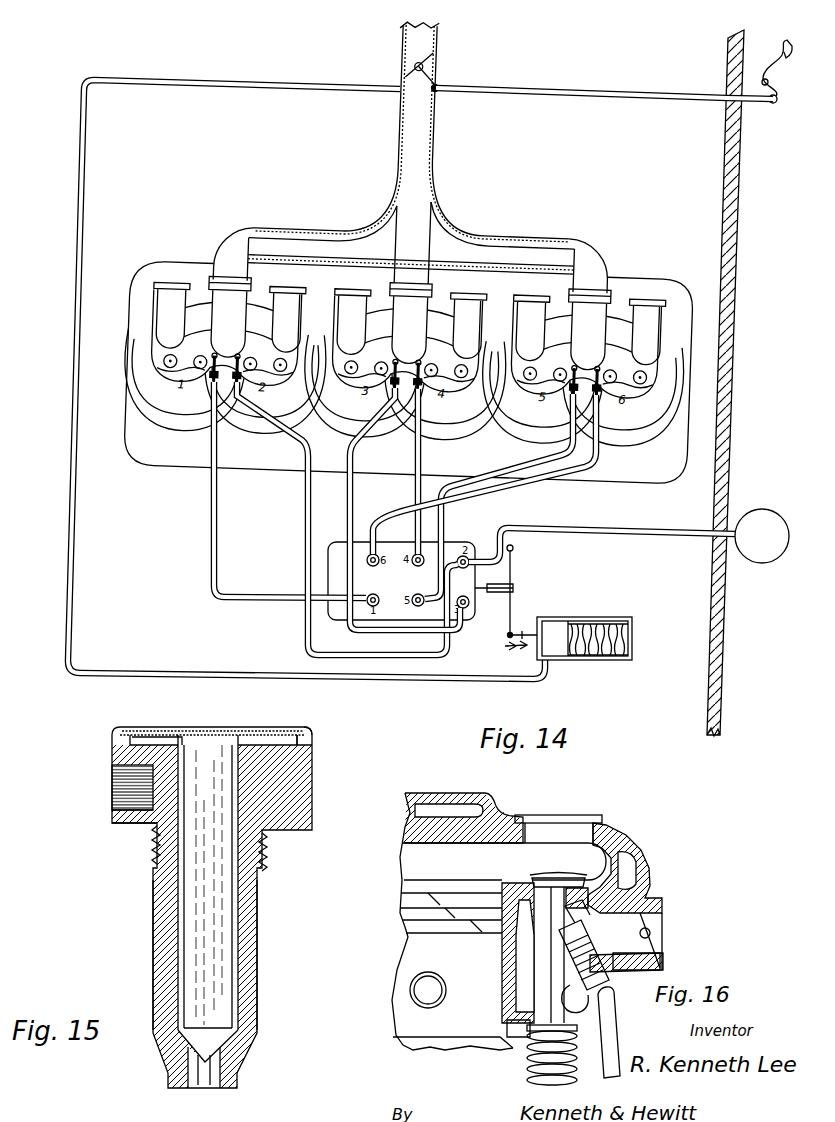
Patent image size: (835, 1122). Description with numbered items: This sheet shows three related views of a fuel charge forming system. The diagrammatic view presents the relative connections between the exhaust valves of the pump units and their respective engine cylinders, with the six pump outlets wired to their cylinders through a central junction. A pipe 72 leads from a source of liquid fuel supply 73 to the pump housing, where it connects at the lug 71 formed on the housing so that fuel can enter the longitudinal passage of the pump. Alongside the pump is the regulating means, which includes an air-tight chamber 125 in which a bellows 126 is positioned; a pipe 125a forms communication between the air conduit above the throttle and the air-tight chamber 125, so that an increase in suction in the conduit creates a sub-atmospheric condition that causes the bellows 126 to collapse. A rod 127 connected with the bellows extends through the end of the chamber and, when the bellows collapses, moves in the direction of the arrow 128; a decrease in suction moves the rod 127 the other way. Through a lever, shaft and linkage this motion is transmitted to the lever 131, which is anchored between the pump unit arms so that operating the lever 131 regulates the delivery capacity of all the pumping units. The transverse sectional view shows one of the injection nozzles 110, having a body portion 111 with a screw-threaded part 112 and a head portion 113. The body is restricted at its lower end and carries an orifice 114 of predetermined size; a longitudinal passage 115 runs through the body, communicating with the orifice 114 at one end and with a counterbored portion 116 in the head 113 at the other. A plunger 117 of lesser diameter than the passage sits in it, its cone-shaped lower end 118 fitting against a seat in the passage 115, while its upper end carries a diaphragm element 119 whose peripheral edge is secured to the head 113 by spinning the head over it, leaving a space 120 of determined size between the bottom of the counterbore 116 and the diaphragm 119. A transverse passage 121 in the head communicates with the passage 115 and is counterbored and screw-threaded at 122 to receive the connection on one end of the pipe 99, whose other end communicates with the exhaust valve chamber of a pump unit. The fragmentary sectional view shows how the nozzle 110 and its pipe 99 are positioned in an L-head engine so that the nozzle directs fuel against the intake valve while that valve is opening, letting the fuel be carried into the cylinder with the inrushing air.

In FIG. 14, the lug 71 is at (478, 552).
In FIG. 14, the pipe 72 is at (590, 534).
In FIG. 14, the source of liquid fuel supply 73 is at (757, 558).
In FIG. 14, the air-tight chamber 125 is at (588, 617).
In FIG. 14, the pipe 125a is at (550, 673).
In FIG. 14, the bellows 126 is at (628, 622).
In FIG. 14, the rod 127 is at (528, 632).
In FIG. 14, the arrow 128 is at (504, 652).
In FIG. 14, the lever 131 is at (512, 577).
In FIG. 15, the nozzle 110 is at (218, 721).
In FIG. 16, the nozzle 110 is at (580, 943).
In FIG. 15, the body portion 111 is at (255, 910).
In FIG. 15, the screw-threaded part 112 is at (265, 858).
In FIG. 15, the head portion 113 is at (300, 800).
In FIG. 15, the orifice 114 is at (205, 1080).
In FIG. 15, the longitudinal passage 115 is at (240, 962).
In FIG. 15, the counterbored portion 116 is at (312, 747).
In FIG. 15, the plunger 117 is at (190, 905).
In FIG. 15, the cone-shaped end 118 is at (215, 1036).
In FIG. 15, the diaphragm element 119 is at (250, 737).
In FIG. 15, the space 120 is at (150, 742).
In FIG. 15, the transverse passage 121 is at (150, 826).
In FIG. 15, the counterbored screw-threaded portion 122 is at (125, 780).
In FIG. 16, the pipe 99 is at (613, 1045).